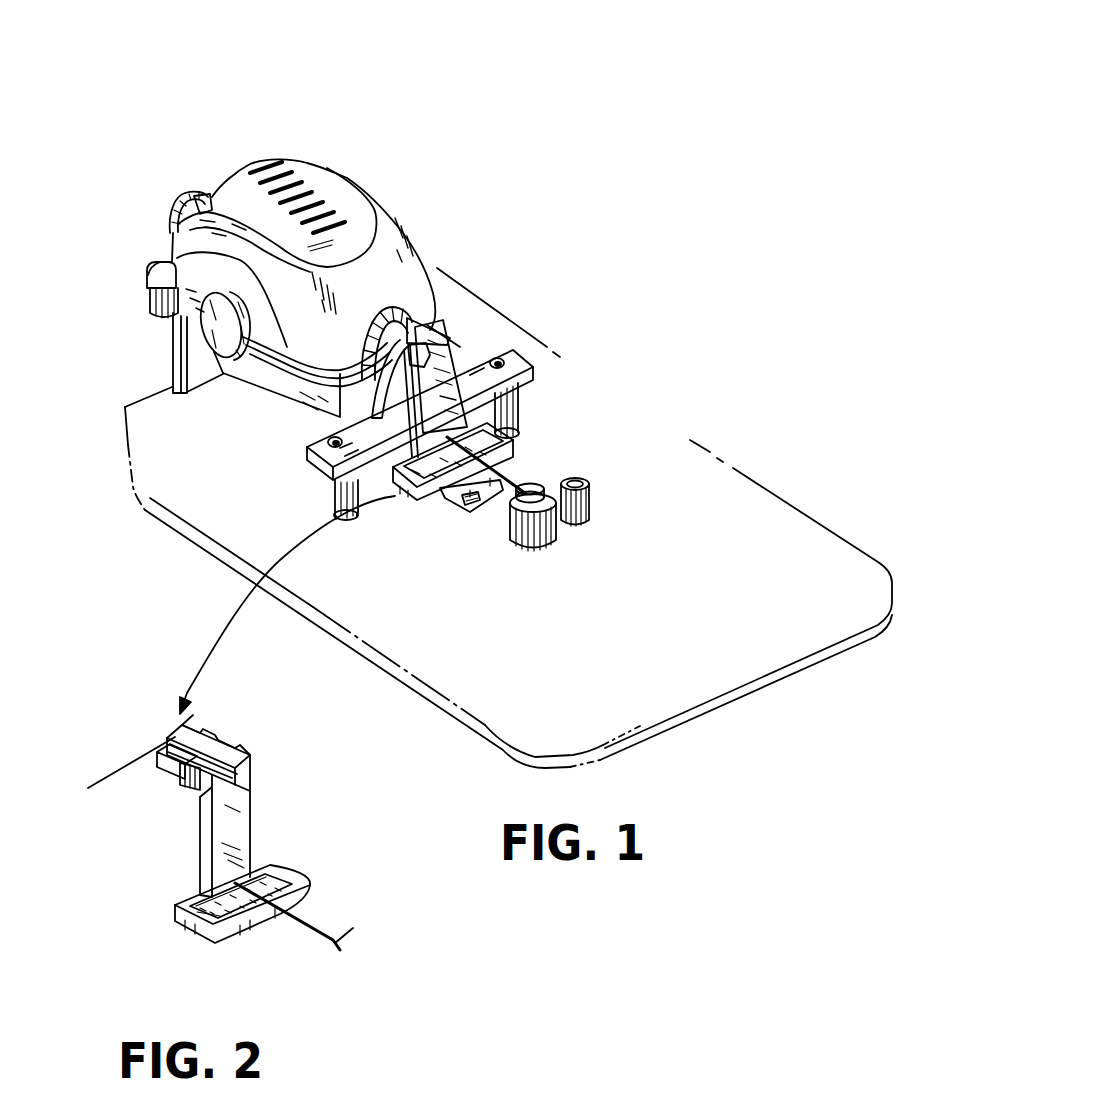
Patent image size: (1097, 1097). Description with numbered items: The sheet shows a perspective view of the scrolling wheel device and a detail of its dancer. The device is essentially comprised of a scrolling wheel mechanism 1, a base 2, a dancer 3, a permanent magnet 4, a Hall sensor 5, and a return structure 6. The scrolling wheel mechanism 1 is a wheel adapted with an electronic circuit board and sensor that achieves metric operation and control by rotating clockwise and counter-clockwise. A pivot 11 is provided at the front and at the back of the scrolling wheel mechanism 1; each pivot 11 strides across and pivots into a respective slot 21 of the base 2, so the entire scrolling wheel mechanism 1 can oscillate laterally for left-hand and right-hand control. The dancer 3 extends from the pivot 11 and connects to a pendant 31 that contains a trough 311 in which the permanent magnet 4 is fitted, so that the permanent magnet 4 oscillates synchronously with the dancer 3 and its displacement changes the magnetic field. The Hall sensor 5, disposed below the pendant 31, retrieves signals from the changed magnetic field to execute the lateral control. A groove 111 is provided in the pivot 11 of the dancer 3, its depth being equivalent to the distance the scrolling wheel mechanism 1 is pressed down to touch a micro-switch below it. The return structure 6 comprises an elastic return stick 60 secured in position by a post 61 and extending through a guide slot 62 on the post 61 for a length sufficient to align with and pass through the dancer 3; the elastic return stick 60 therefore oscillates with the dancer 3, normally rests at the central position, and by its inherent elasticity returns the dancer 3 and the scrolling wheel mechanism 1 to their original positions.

In FIG. 1, the scrolling wheel mechanism 1 is at (349, 156).
In FIG. 1, the base 2 is at (170, 343).
In FIG. 1, the pivot 11 is at (410, 332).
In FIG. 2, the pivot 11 is at (160, 770).
In FIG. 1, the slot 21 is at (448, 340).
In FIG. 1, the dancer 3 is at (543, 372).
In FIG. 1, the permanent magnet 4 is at (505, 402).
In FIG. 2, the permanent magnet 4 is at (273, 867).
In FIG. 1, the pendant 31 is at (467, 478).
In FIG. 2, the pendant 31 is at (232, 937).
In FIG. 1, the trough 311 is at (347, 520).
In FIG. 1, the Hall sensor 5 is at (476, 512).
In FIG. 1, the return structure 6 is at (598, 470).
In FIG. 1, the elastic return stick 60 is at (518, 478).
In FIG. 2, the elastic return stick 60 is at (307, 967).
In FIG. 1, the post 61 is at (533, 552).
In FIG. 1, the guide slot 62 is at (507, 515).
In FIG. 2, the groove 111 is at (170, 777).